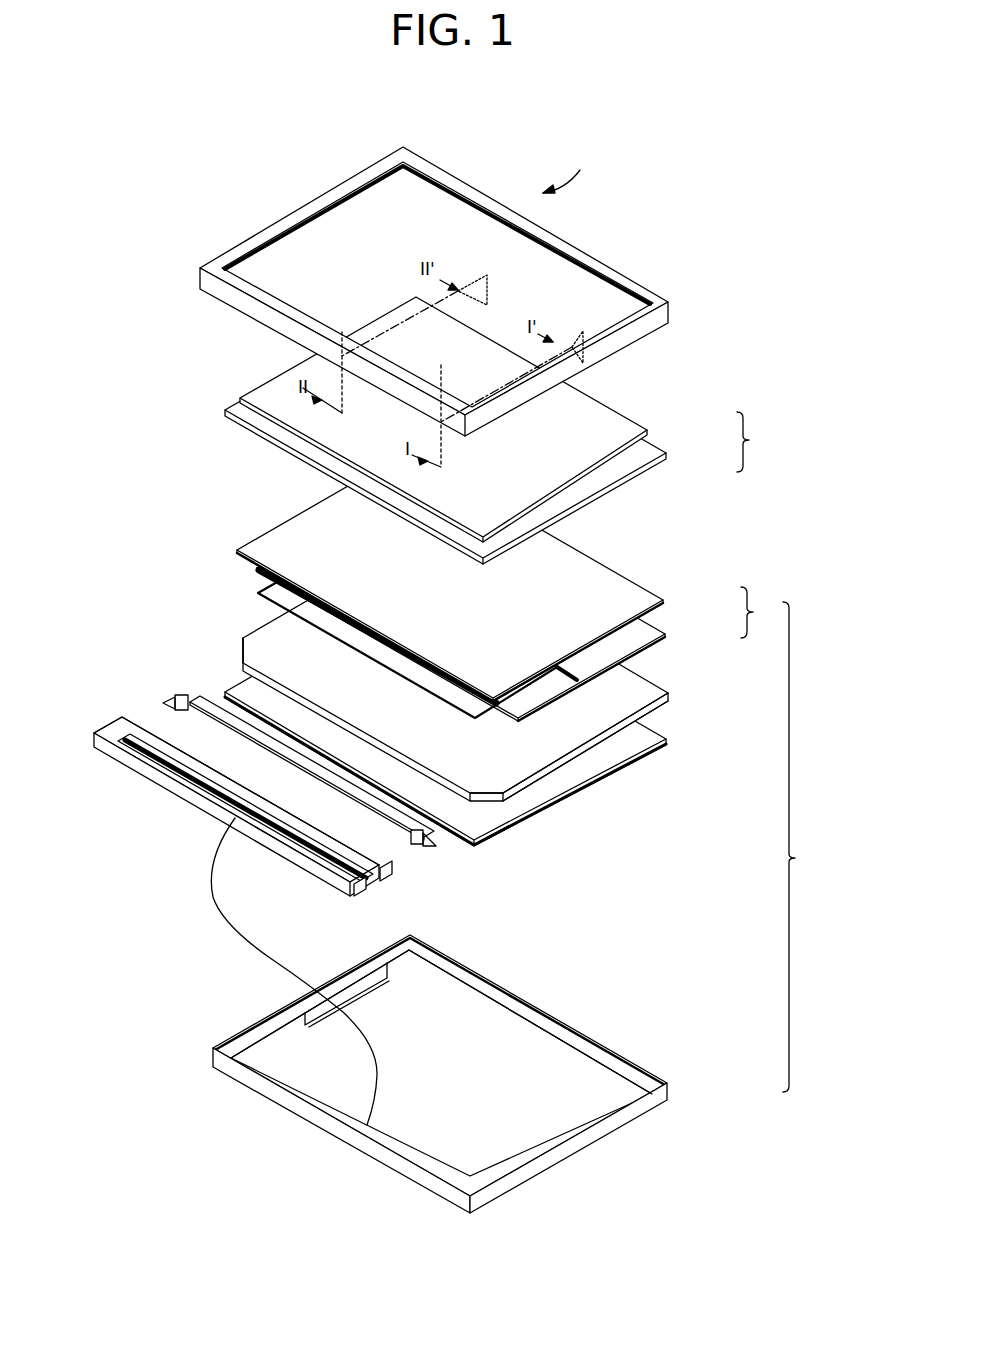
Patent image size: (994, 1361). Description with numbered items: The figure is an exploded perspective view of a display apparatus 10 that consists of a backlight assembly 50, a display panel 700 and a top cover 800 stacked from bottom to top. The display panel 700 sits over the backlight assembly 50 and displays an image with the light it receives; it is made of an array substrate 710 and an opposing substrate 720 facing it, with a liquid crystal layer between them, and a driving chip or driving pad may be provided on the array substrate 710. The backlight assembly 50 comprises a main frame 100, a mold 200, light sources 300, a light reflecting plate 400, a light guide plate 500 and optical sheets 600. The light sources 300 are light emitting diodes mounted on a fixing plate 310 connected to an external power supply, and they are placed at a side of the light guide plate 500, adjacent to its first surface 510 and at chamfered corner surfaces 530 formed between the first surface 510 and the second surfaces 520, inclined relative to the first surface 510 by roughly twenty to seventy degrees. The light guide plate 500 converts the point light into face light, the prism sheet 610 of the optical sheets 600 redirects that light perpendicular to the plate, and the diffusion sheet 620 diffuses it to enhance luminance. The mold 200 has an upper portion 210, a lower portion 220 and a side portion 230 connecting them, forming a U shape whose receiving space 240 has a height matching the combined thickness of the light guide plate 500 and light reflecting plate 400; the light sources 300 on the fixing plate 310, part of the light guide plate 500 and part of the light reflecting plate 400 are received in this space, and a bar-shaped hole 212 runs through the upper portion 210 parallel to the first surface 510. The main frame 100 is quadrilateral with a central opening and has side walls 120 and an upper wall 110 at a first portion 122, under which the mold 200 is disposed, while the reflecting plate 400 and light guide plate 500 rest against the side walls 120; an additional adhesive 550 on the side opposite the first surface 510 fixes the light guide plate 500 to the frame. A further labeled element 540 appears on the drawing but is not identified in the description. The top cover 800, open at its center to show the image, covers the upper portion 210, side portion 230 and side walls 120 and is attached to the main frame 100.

The display apparatus 10 is at (571, 167).
The backlight assembly 50 is at (801, 847).
The main frame 100 is at (670, 1083).
The upper wall 110 is at (330, 1127).
The side walls 120 is at (593, 1147).
The first portion 122 is at (397, 1168).
The mold 200 is at (103, 758).
The upper portion 210 is at (108, 725).
The hole 212 is at (158, 755).
The lower portion 220 is at (386, 880).
The side portion 230 is at (235, 818).
The receiving space 240 is at (362, 895).
The light sources 300 is at (178, 695).
The fixing plate 310 is at (212, 718).
The light reflecting plate 400 is at (668, 738).
The light guide plate 500 is at (670, 694).
The first surface 510 is at (458, 797).
The second surfaces 520 is at (248, 634).
The corner surfaces 530 is at (494, 797).
The fixing portion 540 is at (545, 690).
The adhesive 550 is at (553, 791).
The optical sheets 600 is at (761, 612).
The prism sheet 610 is at (668, 632).
The diffusion sheet 620 is at (668, 598).
The display panel 700 is at (758, 442).
The array substrate 710 is at (664, 455).
The opposing substrate 720 is at (645, 431).
The top cover 800 is at (667, 303).